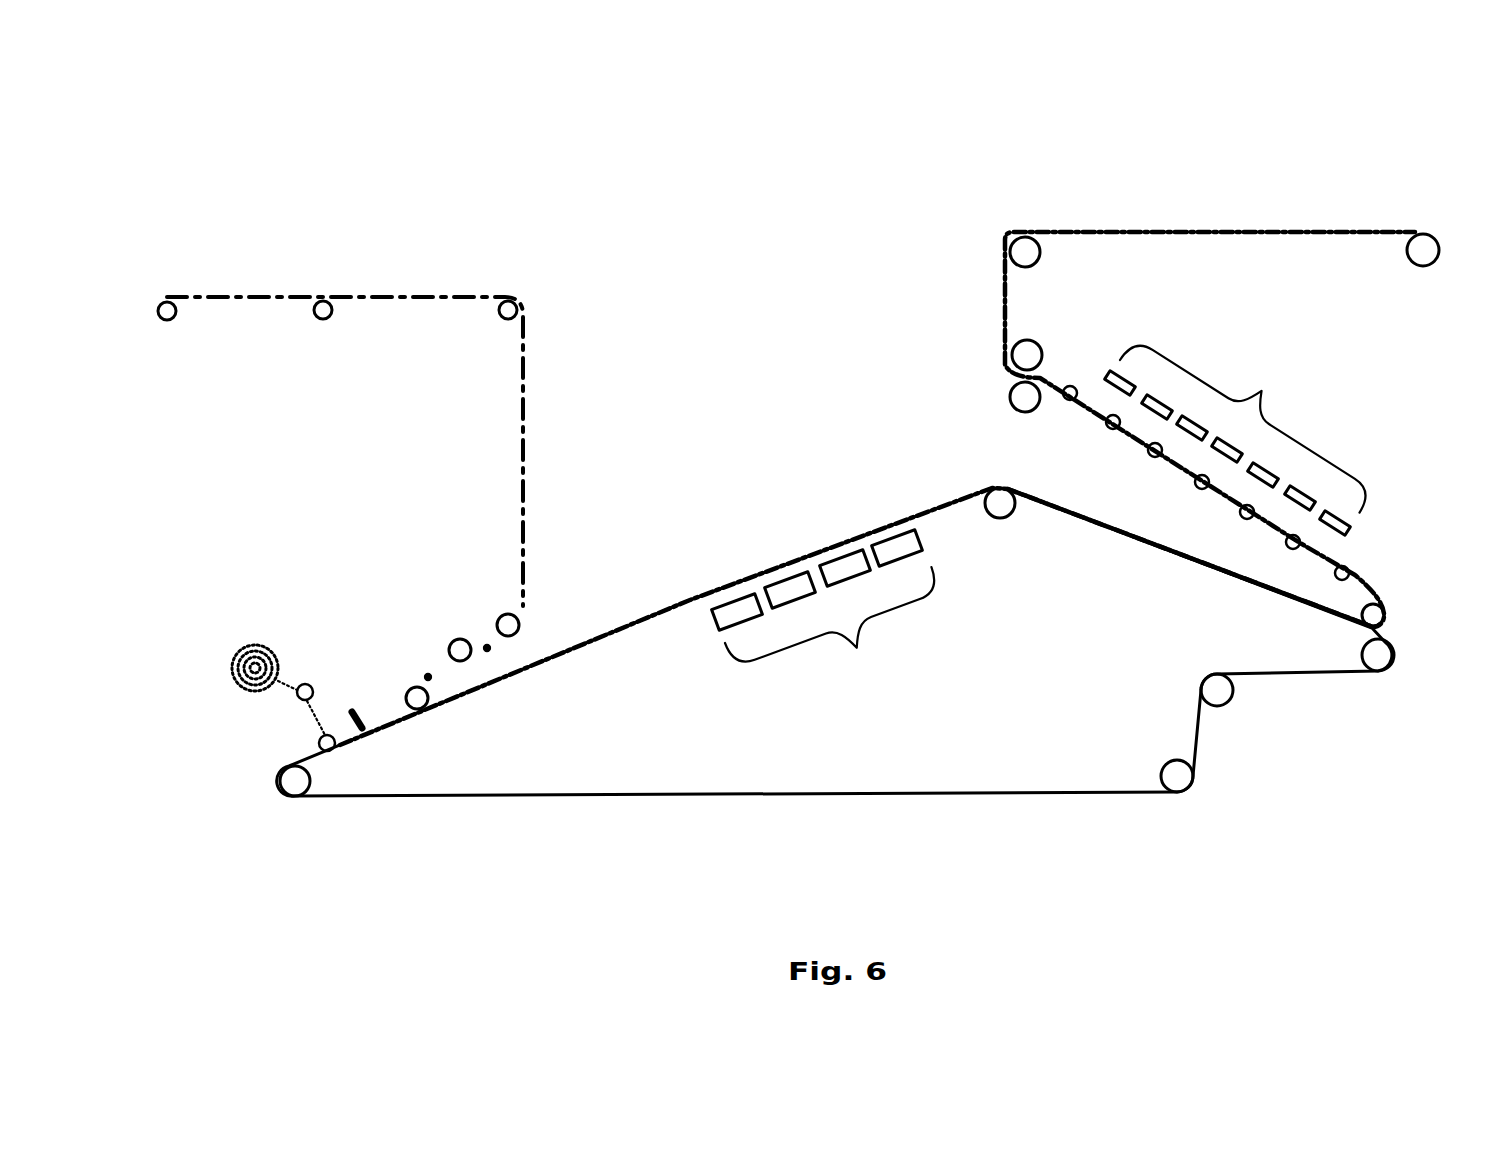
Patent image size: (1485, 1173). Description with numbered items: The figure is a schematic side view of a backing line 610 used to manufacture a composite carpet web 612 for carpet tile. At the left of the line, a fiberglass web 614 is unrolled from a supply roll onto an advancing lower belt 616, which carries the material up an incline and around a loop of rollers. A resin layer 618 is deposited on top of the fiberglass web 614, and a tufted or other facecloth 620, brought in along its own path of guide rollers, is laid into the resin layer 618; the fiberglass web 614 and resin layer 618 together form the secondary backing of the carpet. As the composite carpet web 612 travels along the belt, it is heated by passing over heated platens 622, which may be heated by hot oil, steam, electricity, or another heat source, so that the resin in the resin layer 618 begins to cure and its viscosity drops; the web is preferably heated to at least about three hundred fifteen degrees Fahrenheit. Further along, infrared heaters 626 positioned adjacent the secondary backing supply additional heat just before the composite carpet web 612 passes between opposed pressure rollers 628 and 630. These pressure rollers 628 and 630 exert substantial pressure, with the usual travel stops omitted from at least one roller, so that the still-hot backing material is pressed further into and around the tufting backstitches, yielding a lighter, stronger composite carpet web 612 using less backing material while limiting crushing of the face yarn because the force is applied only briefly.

The backing line 610 is at (318, 204).
The composite carpet web 612 is at (578, 657).
The fiberglass web 614 is at (228, 672).
The lower belt 616 is at (683, 795).
The resin layer 618 is at (360, 712).
The facecloth 620 is at (520, 500).
The heated platens 622 is at (830, 611).
The infrared heaters 626 is at (1224, 449).
The pressure roller 628 is at (1045, 352).
The pressure roller 630 is at (1010, 398).